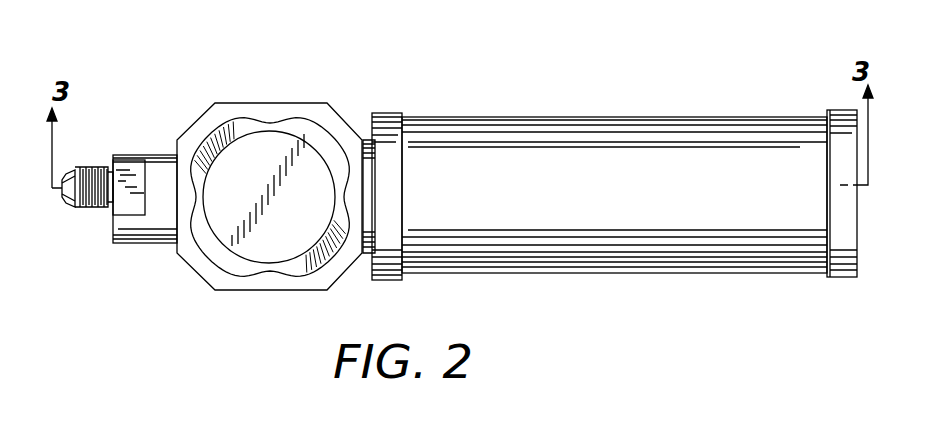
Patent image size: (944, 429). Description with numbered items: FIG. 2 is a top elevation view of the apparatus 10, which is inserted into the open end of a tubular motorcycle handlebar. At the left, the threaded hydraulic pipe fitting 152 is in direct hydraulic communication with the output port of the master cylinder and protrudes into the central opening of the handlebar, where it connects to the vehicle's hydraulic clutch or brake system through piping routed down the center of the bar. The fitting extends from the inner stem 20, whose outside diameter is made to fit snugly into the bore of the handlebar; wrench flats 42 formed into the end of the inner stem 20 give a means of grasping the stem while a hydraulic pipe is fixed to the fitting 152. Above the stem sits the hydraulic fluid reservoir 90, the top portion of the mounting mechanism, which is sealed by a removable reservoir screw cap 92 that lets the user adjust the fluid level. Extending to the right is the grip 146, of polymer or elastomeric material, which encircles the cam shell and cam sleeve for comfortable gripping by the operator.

The optical device assembly 10 is at (441, 100).
The inner stem 20 is at (148, 245).
The wrench flats 42 is at (131, 167).
The hydraulic fluid reservoir 90 is at (232, 103).
The reservoir screw cap 92 is at (300, 143).
The grip 146 is at (748, 122).
The threaded hydraulic pipe fitting 152 is at (90, 165).